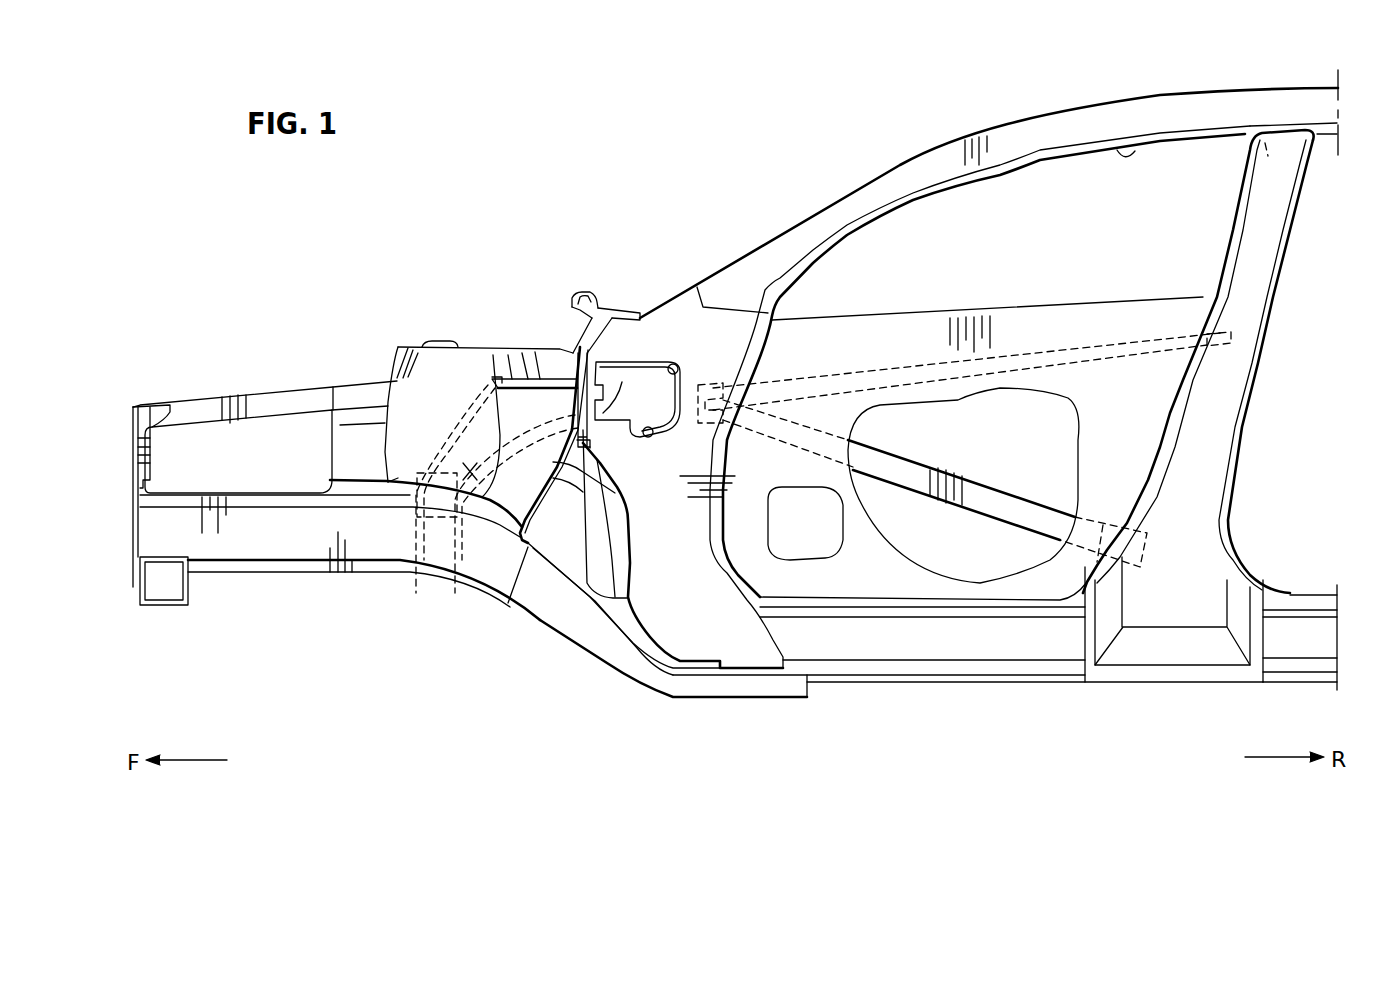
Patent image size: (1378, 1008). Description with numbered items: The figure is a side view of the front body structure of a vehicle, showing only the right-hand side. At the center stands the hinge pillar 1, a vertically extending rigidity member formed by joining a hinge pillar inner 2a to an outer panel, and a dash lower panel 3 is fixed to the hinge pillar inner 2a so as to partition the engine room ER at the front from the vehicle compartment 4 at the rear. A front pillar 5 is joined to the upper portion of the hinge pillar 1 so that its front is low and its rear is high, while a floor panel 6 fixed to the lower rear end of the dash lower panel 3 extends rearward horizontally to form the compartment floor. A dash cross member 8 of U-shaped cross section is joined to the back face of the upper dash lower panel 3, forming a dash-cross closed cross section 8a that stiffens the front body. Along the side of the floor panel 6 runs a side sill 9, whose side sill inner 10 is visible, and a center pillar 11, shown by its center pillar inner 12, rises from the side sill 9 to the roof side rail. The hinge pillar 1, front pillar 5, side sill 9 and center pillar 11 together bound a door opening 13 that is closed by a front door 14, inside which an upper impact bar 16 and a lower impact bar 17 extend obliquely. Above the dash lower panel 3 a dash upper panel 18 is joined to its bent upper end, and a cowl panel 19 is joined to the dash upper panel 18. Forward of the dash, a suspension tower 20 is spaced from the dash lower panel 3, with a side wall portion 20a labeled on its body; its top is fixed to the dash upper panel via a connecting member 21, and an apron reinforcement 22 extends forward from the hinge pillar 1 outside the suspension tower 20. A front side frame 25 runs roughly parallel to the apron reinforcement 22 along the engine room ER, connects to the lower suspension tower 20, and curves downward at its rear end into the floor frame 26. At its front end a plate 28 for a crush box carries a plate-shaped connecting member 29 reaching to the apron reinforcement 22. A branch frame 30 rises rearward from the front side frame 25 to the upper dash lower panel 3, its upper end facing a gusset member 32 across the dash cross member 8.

The hinge pillar 1 is at (765, 354).
The hinge pillar inner 2a is at (713, 440).
The dash lower panel 3 is at (615, 491).
The vehicle compartment 4 is at (681, 602).
The front pillar 5 is at (815, 218).
The floor panel 6 is at (640, 662).
The dash cross member 8 is at (588, 438).
The dash-cross closed cross section 8a is at (585, 385).
The side sill 9 is at (1293, 588).
The side sill inner 10 is at (928, 647).
The center pillar 11 is at (1259, 402).
The center pillar inner 12 is at (1218, 433).
The door opening 13 is at (1138, 150).
The front door 14 is at (1066, 290).
The upper impact bar 16 is at (990, 485).
The lower impact bar 17 is at (1118, 345).
The dash upper panel 18 is at (607, 335).
The cowl panel 19 is at (583, 292).
The suspension tower 20 is at (429, 338).
The suspension tower side wall 20a is at (408, 468).
The connecting member 21 is at (537, 377).
The apron reinforcement 22 is at (288, 395).
The front side frame 25 is at (270, 545).
The floor frame 26 is at (560, 620).
The plate 28 is at (137, 528).
The connecting member 29 is at (150, 410).
The branch frame 30 is at (468, 593).
The gusset member 32 is at (672, 428).
The engine room ER is at (349, 664).